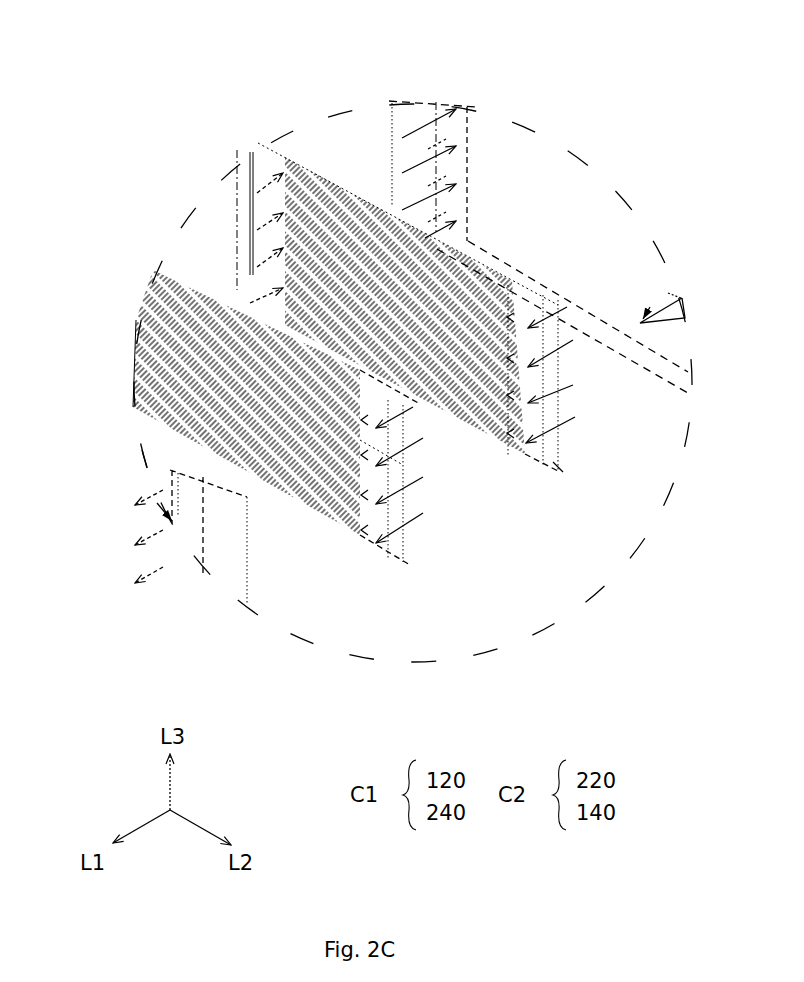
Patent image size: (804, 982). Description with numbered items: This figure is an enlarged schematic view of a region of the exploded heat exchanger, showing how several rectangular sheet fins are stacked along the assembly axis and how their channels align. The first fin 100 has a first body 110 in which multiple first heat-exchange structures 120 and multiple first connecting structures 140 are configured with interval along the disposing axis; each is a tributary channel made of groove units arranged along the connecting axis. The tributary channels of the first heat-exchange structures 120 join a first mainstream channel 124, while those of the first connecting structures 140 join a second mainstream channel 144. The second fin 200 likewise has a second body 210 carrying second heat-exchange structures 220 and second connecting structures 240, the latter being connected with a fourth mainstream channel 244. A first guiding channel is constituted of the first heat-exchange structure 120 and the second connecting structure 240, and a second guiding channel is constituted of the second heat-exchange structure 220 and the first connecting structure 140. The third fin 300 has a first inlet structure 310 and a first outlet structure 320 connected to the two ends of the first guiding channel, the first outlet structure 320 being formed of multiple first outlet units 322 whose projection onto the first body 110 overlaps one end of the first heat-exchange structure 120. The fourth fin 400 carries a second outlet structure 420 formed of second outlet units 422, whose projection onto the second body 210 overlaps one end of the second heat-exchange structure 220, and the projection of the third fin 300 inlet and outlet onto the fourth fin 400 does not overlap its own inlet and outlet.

The first fin 100 is at (241, 140).
The first body 110 is at (560, 477).
The first heat-exchange structure 120 is at (519, 331).
The first mainstream channel 124 is at (549, 435).
The first connecting structure 140 is at (529, 370).
The second mainstream channel 144 is at (246, 243).
The second fin 200 is at (130, 367).
The second body 210 is at (395, 551).
The second heat-exchange structure 220 is at (140, 307).
The second connecting structure 240 is at (154, 289).
The fourth mainstream channel 244 is at (386, 516).
The third fin 300 is at (449, 90).
The first inlet structure 310 is at (663, 290).
The first outlet structure 320 is at (477, 133).
The first outlet unit 322 is at (436, 132).
The fourth fin 400 is at (137, 464).
The second outlet structure 420 is at (185, 487).
The second outlet unit 422 is at (200, 527).